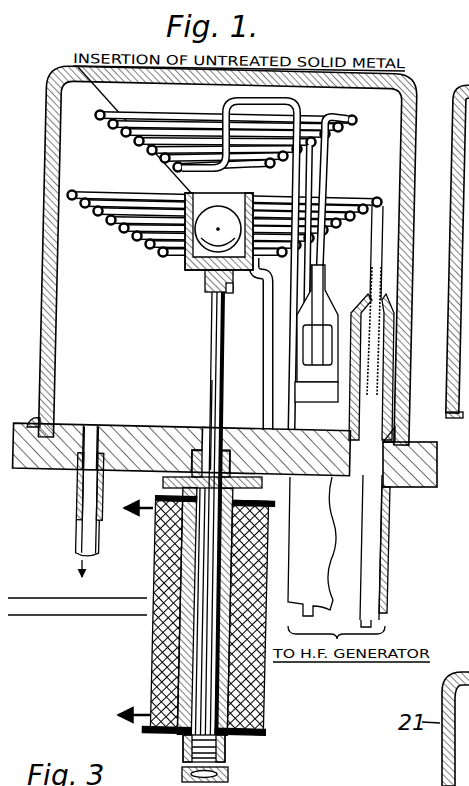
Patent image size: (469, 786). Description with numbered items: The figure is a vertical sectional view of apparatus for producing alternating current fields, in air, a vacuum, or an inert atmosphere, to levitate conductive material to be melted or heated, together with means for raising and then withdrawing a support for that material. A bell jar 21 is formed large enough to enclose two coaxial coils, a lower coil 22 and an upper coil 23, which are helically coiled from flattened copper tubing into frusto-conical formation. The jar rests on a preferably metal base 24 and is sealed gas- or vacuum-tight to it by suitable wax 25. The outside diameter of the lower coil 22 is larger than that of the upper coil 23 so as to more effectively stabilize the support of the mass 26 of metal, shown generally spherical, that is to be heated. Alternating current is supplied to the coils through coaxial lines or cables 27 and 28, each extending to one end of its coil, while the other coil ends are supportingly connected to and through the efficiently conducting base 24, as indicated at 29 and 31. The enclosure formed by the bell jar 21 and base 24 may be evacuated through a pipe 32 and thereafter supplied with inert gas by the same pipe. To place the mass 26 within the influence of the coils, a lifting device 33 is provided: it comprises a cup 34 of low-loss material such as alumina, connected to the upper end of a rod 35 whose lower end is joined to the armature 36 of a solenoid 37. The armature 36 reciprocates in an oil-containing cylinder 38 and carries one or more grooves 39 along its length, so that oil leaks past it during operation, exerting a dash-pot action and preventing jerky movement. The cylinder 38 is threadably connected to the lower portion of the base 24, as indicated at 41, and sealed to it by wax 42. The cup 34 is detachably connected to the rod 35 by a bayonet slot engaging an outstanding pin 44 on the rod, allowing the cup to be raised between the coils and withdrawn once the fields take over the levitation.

The bell jar 21 is at (416, 91).
The lower coil 22 is at (341, 203).
The upper coil 23 is at (150, 115).
The base 24 is at (416, 487).
The wax 25 is at (402, 436).
The mass of metal 26 is at (195, 243).
The coaxial line 27 is at (376, 363).
The coaxial line 28 is at (323, 313).
The coil end connection 29 is at (288, 423).
The coil end connection 31 is at (261, 428).
The pipe 32 is at (75, 509).
The lifting device 33 is at (205, 386).
The cup 34 is at (204, 280).
The rod 35 is at (211, 350).
The armature 36 is at (226, 740).
The solenoid 37 is at (153, 648).
The cylinder 38 is at (183, 773).
The grooves 39 is at (204, 736).
The threaded connection 41 is at (188, 460).
The wax 42 is at (157, 483).
The pin 44 is at (231, 286).